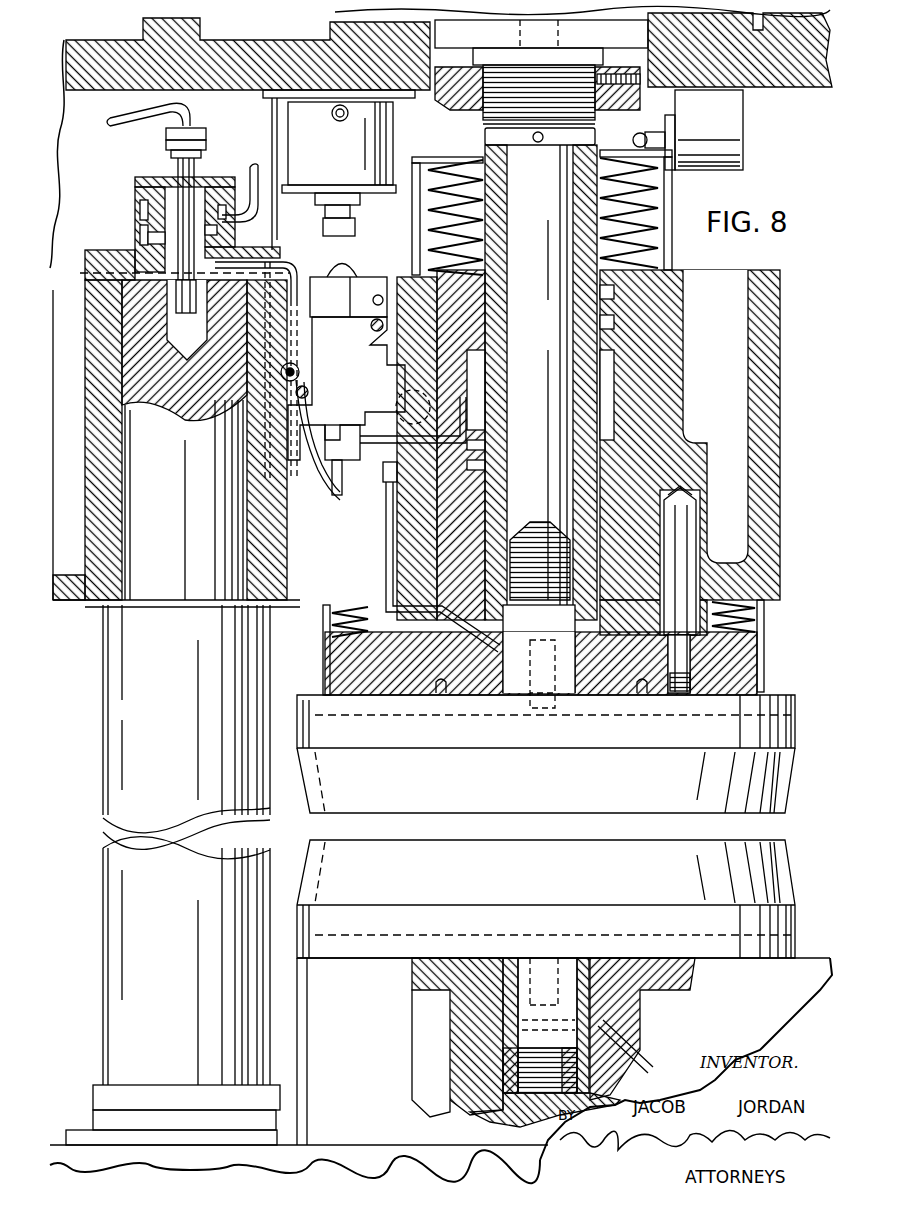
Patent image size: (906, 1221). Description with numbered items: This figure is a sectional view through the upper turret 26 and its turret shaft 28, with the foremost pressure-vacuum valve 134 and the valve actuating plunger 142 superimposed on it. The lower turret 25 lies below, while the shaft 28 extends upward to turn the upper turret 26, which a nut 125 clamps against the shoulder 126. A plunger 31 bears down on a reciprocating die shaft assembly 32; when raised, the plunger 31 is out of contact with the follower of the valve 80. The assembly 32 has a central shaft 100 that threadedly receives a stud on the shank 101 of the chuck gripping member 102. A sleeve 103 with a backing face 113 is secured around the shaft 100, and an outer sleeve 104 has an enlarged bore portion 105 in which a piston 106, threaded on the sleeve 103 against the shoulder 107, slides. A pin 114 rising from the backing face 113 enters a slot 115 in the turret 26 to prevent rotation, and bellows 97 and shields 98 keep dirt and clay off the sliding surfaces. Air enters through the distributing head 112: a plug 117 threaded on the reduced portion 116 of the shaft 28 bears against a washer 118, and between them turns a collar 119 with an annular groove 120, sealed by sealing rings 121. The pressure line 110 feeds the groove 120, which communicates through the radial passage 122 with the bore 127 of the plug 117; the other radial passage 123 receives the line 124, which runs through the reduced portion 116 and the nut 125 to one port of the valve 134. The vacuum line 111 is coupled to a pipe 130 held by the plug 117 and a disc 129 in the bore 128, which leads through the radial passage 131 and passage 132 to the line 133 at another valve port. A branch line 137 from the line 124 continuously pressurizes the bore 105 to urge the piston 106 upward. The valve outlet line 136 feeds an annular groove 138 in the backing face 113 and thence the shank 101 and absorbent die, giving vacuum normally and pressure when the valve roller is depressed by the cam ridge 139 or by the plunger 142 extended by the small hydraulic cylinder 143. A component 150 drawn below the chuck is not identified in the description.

The lower turret 25 is at (362, 1145).
The upper turret 26 is at (766, 432).
The vertical turret shaft 28 is at (103, 696).
The plunger 31 is at (598, 116).
The reciprocating die shaft assembly 32 is at (480, 138).
The valve 80 is at (744, 157).
The bellows 97 is at (665, 248).
The shields 98 is at (671, 203).
The central shaft 100 is at (541, 382).
The shank 101 is at (539, 648).
The chuck gripping member 102 is at (781, 696).
The sleeve 103 is at (493, 489).
The sleeve 104 is at (468, 528).
The enlarged bore portion 105 is at (467, 397).
The piston 106 is at (478, 321).
The shoulder 107 is at (478, 365).
The pressure line 110 is at (255, 166).
The vacuum line 111 is at (133, 127).
The distributing head 112 is at (120, 186).
The backing face 113 is at (760, 648).
The pin 114 is at (693, 536).
The slot 115 is at (698, 503).
The reduced portion 116 is at (176, 443).
The plug 117 is at (146, 178).
The washer 118 is at (148, 238).
The collar 119 is at (140, 230).
The annular groove 120 is at (140, 210).
The sealing rings 121 is at (230, 232).
The radial passage 122 is at (208, 198).
The radial passage 123 is at (268, 246).
The line 124 is at (292, 263).
The nut 125 is at (90, 262).
The shoulder 126 is at (105, 612).
The bore 127 is at (228, 218).
The bore 128 is at (172, 340).
The disc 129 is at (176, 305).
The pipe 130 is at (180, 318).
The radial passage 131 is at (217, 343).
The passage 132 is at (292, 360).
The line 133 is at (326, 497).
The valve 134 is at (355, 372).
The valve outlet line 136 is at (384, 520).
The line 137 is at (405, 440).
The annular groove 138 is at (505, 649).
The cam ridge 139 is at (275, 204).
The plunger 142 is at (358, 229).
The hydraulic cylinder 143 is at (393, 141).
The lower plate 150 is at (773, 858).